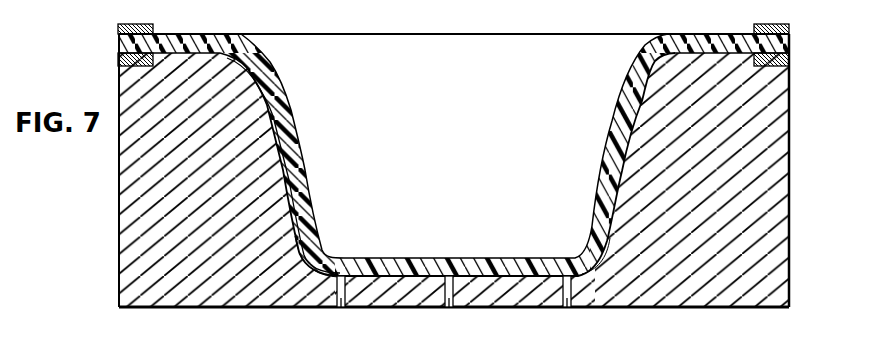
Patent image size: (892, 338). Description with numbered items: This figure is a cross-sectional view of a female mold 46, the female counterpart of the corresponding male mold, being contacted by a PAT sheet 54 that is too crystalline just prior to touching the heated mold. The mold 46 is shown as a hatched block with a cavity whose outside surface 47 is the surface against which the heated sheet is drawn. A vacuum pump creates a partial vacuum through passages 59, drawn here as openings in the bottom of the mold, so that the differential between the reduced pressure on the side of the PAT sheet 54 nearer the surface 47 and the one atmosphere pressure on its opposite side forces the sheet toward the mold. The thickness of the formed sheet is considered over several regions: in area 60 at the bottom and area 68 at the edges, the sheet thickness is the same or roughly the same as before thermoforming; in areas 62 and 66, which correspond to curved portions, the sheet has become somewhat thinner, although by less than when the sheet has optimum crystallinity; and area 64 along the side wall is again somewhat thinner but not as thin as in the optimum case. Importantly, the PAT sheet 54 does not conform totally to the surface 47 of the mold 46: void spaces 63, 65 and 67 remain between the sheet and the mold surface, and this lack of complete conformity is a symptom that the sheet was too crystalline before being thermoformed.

The mold 46 is at (226, 203).
The mold surface 47 is at (308, 176).
The PAT sheet 54 is at (607, 160).
The passage 59 is at (449, 307).
The area 60 is at (459, 257).
The area 62 is at (330, 226).
The void space 63 is at (318, 266).
The area 64 is at (297, 103).
The void space 65 is at (211, 47).
The area 66 is at (266, 49).
The void space 67 is at (276, 92).
The area 68 is at (161, 33).